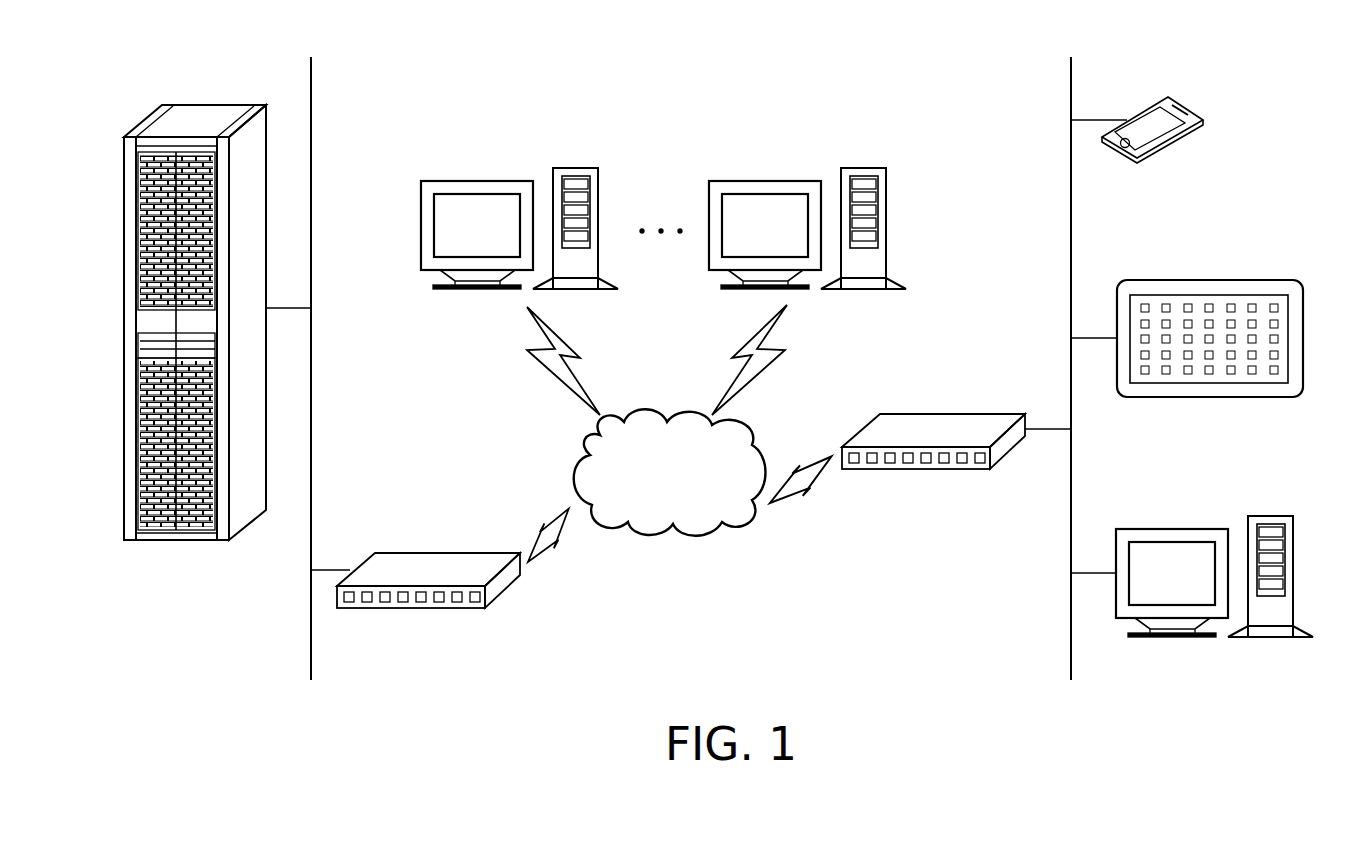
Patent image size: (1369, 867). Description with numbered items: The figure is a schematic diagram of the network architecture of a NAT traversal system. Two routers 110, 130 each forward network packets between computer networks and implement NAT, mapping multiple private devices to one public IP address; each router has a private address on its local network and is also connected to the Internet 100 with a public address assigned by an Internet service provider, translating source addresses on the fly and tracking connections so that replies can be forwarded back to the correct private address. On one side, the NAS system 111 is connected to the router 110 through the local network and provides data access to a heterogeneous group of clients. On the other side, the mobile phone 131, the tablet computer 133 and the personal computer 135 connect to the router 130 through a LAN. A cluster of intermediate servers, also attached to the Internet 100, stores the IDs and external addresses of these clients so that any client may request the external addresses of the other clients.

The Internet 100 is at (665, 534).
The router 110 is at (433, 568).
The NAS system 111 is at (197, 128).
The router 130 is at (935, 428).
The mobile phone 131 is at (1188, 103).
The tablet computer 133 is at (1208, 280).
The personal computer 135 is at (1171, 528).